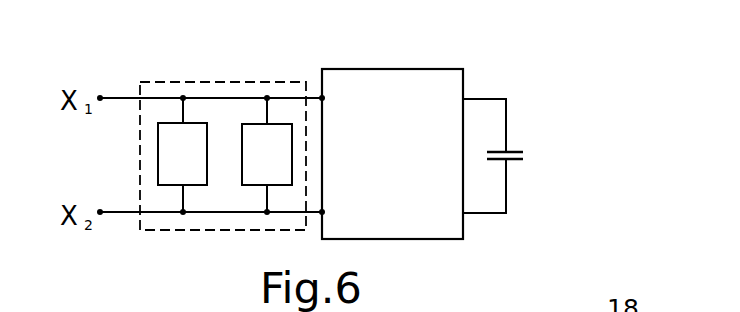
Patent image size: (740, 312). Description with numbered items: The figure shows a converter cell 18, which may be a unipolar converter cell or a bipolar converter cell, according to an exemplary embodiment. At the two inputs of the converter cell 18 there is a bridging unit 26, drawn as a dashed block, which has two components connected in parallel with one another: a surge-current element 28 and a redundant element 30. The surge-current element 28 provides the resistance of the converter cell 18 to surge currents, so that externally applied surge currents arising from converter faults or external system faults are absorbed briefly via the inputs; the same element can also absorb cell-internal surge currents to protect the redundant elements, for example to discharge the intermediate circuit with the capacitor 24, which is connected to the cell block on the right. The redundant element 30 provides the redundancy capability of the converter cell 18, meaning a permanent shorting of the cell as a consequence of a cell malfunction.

The converter cell 18 is at (568, 100).
The capacitor 24 is at (515, 163).
The bridging unit 26 is at (162, 82).
The surge-current element 28 is at (175, 185).
The redundant element 30 is at (252, 185).